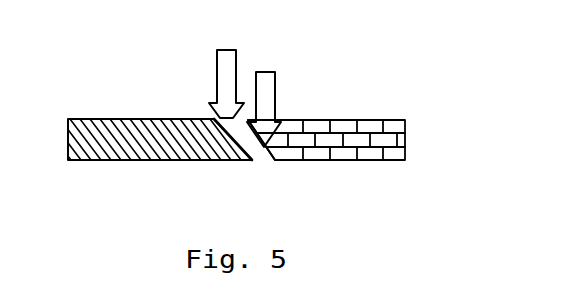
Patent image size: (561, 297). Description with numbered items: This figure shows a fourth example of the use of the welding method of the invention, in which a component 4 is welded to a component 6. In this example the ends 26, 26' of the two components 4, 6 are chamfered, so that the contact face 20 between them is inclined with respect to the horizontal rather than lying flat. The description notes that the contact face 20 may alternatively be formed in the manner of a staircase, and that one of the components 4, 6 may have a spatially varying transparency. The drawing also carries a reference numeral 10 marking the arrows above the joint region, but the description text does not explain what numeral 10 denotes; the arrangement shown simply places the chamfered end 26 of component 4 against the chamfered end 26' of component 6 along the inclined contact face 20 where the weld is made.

The component 4 is at (146, 146).
The component 6 is at (398, 148).
The pressing force arrows 10 is at (262, 72).
The contact face 20 is at (245, 140).
The end 26 is at (220, 172).
The end 26' is at (308, 120).